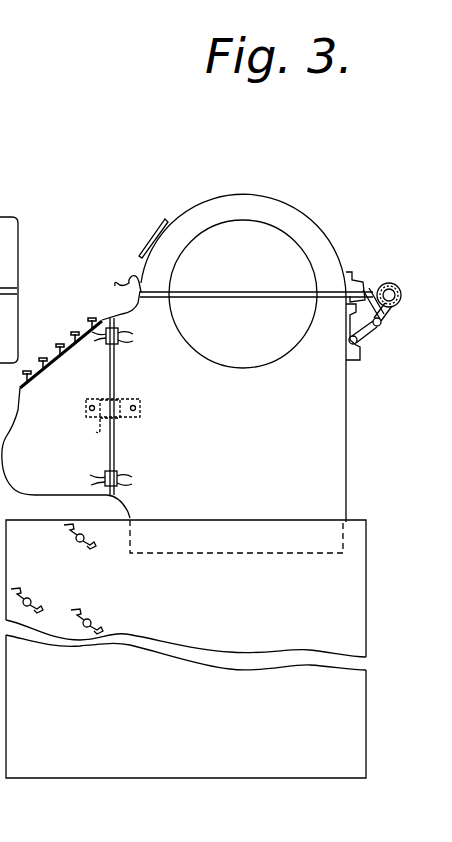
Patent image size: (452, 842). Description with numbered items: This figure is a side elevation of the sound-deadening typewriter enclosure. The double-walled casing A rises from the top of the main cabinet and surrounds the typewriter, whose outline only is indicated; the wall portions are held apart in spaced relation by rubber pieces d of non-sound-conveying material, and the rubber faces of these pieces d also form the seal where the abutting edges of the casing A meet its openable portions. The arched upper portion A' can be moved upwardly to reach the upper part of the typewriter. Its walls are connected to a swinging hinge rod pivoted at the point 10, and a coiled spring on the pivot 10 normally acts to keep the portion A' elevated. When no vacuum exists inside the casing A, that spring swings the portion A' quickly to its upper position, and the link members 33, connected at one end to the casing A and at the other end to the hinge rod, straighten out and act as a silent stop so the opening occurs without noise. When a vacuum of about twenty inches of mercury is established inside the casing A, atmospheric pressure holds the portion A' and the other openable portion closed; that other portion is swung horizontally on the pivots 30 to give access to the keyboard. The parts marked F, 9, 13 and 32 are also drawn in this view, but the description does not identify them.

The upper portion of the casing A' is at (242, 223).
The casing A is at (202, 525).
The flywheel F is at (279, 343).
The rubber pieces d is at (18, 290).
The hook guide 9 is at (117, 281).
The toothed bar 13 is at (46, 357).
The pivots 30 is at (120, 346).
The pivot 10 is at (396, 287).
The crank arm 32 is at (369, 290).
The link members 33 is at (362, 345).